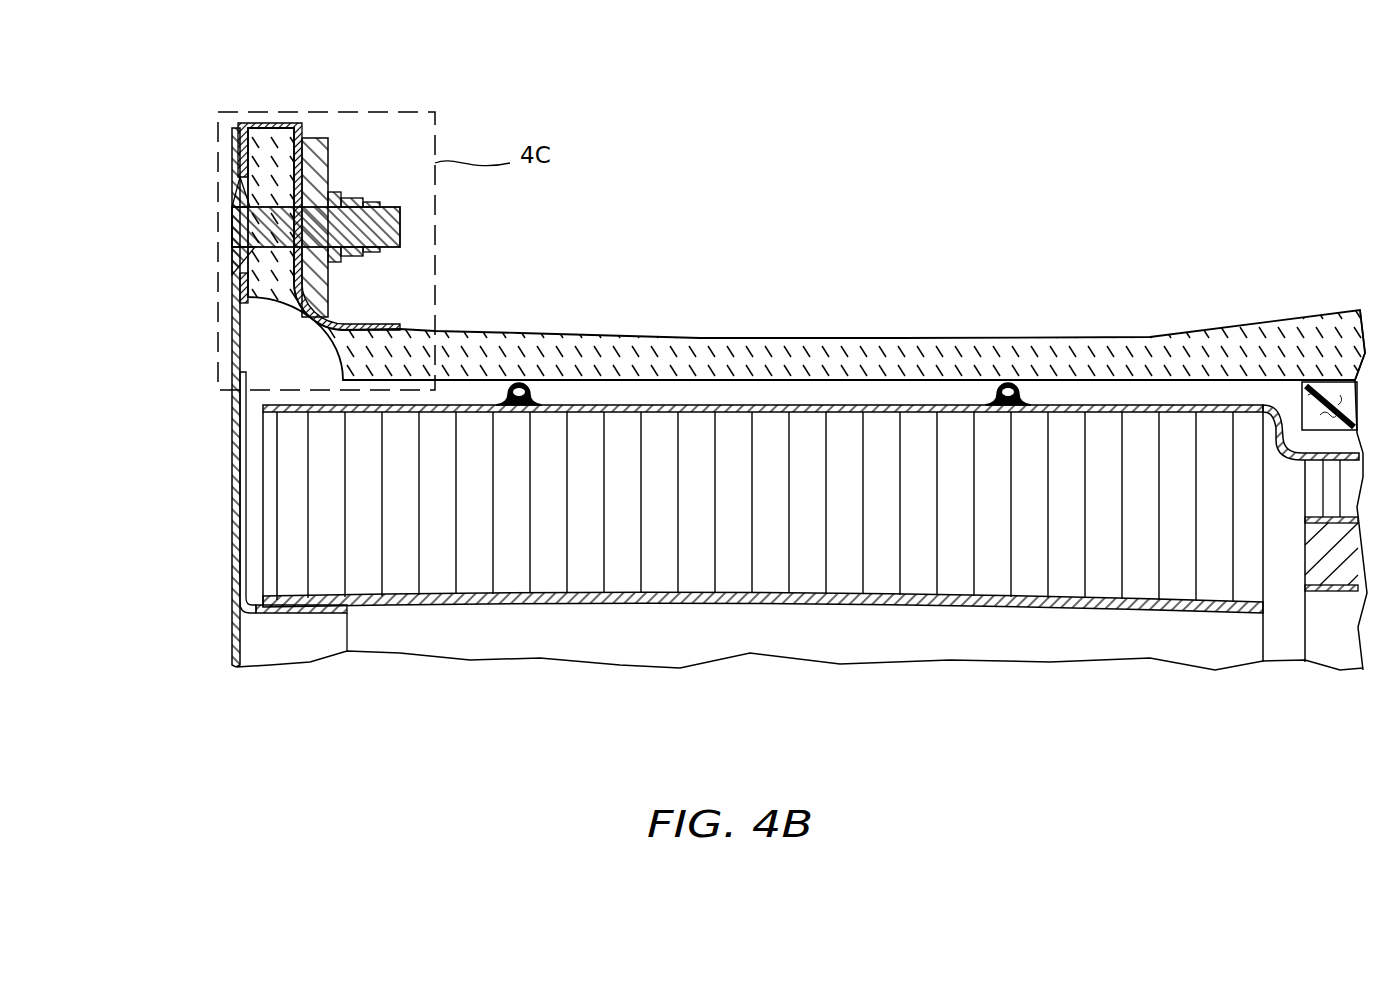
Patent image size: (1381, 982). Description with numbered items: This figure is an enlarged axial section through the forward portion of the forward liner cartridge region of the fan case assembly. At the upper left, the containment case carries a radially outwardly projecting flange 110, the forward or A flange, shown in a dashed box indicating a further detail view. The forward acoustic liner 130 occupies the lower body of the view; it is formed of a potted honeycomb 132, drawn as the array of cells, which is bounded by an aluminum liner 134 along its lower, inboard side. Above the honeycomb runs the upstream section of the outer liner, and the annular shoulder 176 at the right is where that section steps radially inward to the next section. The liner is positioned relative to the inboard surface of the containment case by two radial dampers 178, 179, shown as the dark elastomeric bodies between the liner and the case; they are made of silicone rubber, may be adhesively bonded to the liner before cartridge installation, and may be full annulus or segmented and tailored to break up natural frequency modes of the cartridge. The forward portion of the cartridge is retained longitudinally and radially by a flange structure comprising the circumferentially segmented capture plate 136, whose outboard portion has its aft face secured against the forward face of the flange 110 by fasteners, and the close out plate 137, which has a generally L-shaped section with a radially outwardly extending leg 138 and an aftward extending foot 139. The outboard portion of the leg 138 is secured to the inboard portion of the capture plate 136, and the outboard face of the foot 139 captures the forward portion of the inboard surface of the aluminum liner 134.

The flange 110 is at (282, 101).
The forward acoustic liner 130 is at (687, 606).
The potted honeycomb 132 is at (770, 555).
The aluminum liner 134 is at (596, 606).
The capture plate 136 is at (232, 323).
The close out plate 137 is at (218, 585).
The leg 138 is at (240, 518).
The foot 139 is at (277, 616).
The annular shoulder 176 is at (1262, 405).
The radial damper 178 is at (518, 380).
The radial damper 179 is at (1007, 382).